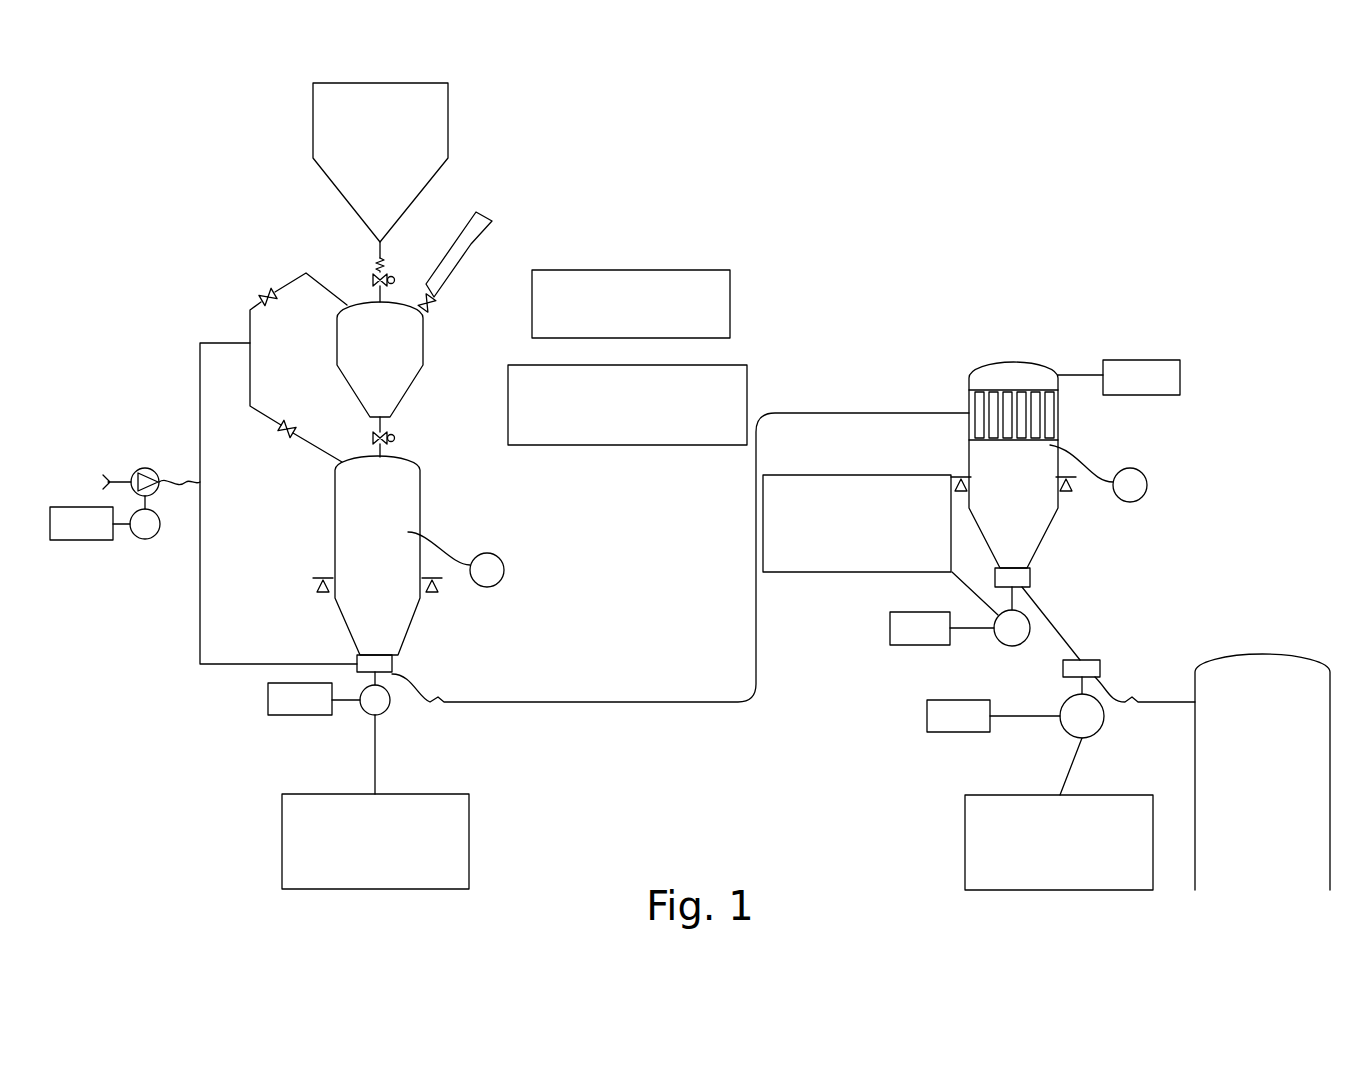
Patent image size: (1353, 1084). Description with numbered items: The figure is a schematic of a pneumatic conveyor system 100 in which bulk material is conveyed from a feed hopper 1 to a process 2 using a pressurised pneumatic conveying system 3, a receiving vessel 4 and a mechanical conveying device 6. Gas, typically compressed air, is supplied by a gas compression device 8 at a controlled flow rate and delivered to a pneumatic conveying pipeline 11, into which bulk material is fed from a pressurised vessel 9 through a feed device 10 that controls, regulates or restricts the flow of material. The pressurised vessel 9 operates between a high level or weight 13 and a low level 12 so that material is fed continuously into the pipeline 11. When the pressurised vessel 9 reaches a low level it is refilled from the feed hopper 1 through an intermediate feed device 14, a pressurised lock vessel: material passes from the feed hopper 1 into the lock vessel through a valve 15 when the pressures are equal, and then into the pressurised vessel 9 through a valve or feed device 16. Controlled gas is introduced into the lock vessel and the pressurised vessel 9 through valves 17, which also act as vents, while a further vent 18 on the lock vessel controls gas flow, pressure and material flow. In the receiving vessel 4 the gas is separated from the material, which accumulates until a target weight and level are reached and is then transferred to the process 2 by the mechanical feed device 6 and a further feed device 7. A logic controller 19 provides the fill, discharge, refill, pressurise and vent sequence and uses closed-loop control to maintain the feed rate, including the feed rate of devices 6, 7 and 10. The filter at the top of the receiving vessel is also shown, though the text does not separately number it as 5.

The pneumatic conveyor system 100 is at (555, 158).
The feed hopper 1 is at (448, 147).
The process 2 is at (1268, 655).
The pressurised pneumatic conveying system 3 is at (613, 651).
The receiving vessel 4 is at (1058, 502).
The filter 5 is at (976, 402).
The mechanical conveying device 6 is at (1020, 578).
The feed device 7 is at (1088, 668).
The gas compression device 8 is at (150, 468).
The pressurised vessel 9 is at (335, 508).
The feed device 10 is at (392, 663).
The pneumatic conveying pipeline 11 is at (588, 703).
The low level 12 is at (492, 552).
The weight 13 is at (318, 585).
The intermediate feed device 14 is at (337, 338).
The valve 15 is at (373, 282).
The valve or feed device 16 is at (386, 436).
The valve 17 is at (262, 292).
The vent 18 is at (436, 308).
The logic controller 19 is at (730, 290).